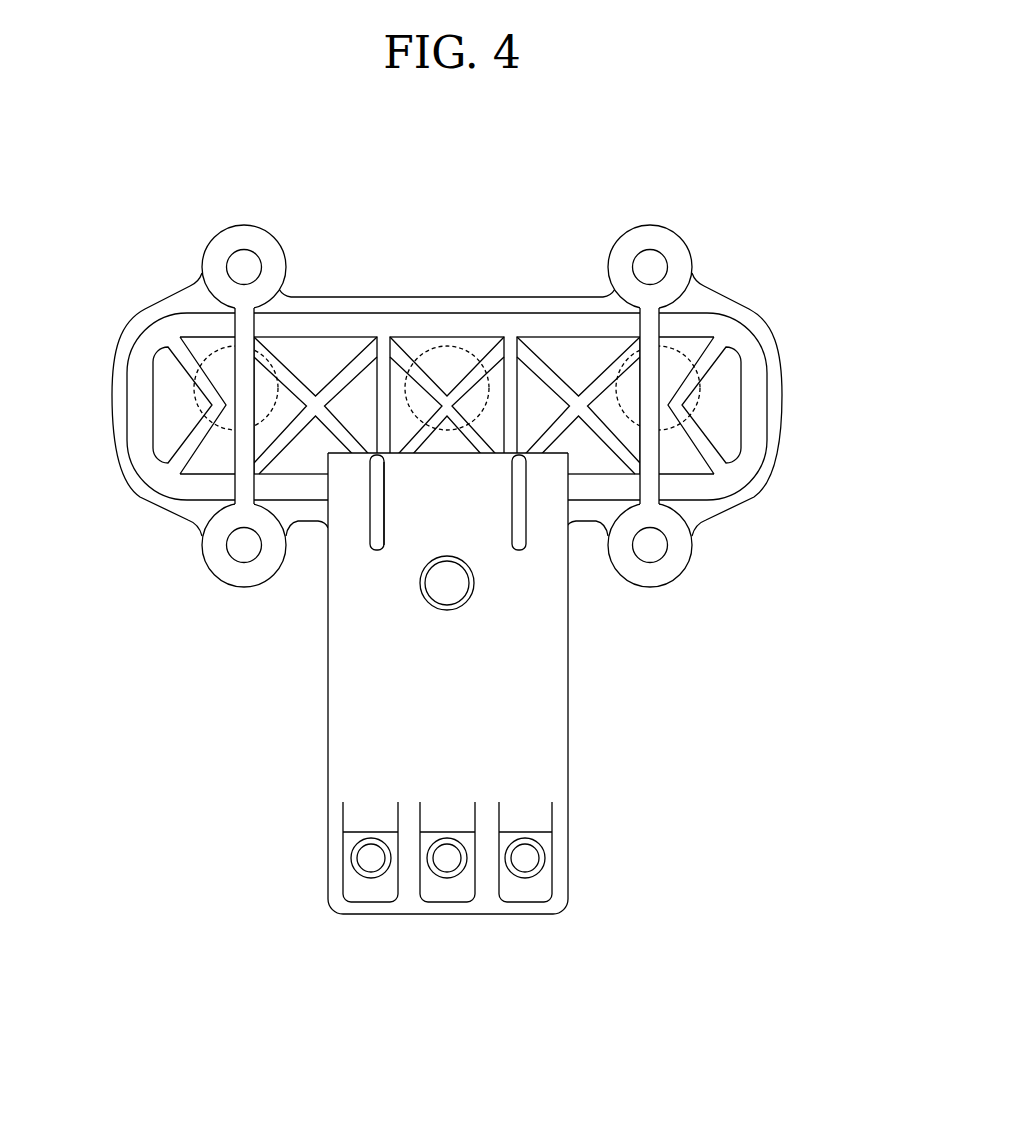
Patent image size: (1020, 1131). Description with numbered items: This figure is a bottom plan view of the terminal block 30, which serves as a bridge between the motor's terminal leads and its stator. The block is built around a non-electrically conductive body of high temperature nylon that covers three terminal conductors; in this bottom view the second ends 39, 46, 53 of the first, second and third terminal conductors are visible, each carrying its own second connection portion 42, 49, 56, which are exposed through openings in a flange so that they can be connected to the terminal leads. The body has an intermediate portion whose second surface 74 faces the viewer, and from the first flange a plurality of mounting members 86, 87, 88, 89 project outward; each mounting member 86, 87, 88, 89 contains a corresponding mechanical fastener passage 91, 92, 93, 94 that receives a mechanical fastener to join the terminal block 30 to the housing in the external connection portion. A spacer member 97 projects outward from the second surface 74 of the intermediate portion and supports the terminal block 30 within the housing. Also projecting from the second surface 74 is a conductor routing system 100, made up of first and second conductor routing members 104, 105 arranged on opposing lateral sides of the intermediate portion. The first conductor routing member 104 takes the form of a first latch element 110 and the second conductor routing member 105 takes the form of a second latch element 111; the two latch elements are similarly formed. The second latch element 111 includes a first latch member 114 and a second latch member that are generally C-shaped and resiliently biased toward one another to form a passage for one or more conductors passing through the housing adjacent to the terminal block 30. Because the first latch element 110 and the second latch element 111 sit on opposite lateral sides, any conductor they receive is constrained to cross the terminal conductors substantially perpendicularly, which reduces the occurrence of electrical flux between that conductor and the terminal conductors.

The terminal block 30 is at (453, 582).
The second end 39 is at (545, 890).
The second connection portion 42 is at (517, 848).
The second end 46 is at (435, 892).
The second connection portion 49 is at (440, 857).
The second end 53 is at (350, 886).
The second connection portion 56 is at (372, 848).
The second surface 74 is at (492, 710).
The mounting member 86 is at (701, 570).
The mounting member 87 is at (701, 242).
The mounting member 88 is at (203, 588).
The mounting member 89 is at (212, 221).
The mechanical fastener passage 91 is at (655, 558).
The mechanical fastener passage 92 is at (653, 258).
The mechanical fastener passage 93 is at (243, 547).
The mechanical fastener passage 94 is at (240, 260).
The spacer member 97 is at (487, 628).
The conductor routing system 100 is at (384, 651).
The first conductor routing member 104 is at (543, 580).
The second conductor routing member 105 is at (362, 583).
The first latch element 110 is at (540, 485).
The second latch element 111 is at (399, 477).
The first latch member 114 is at (376, 494).